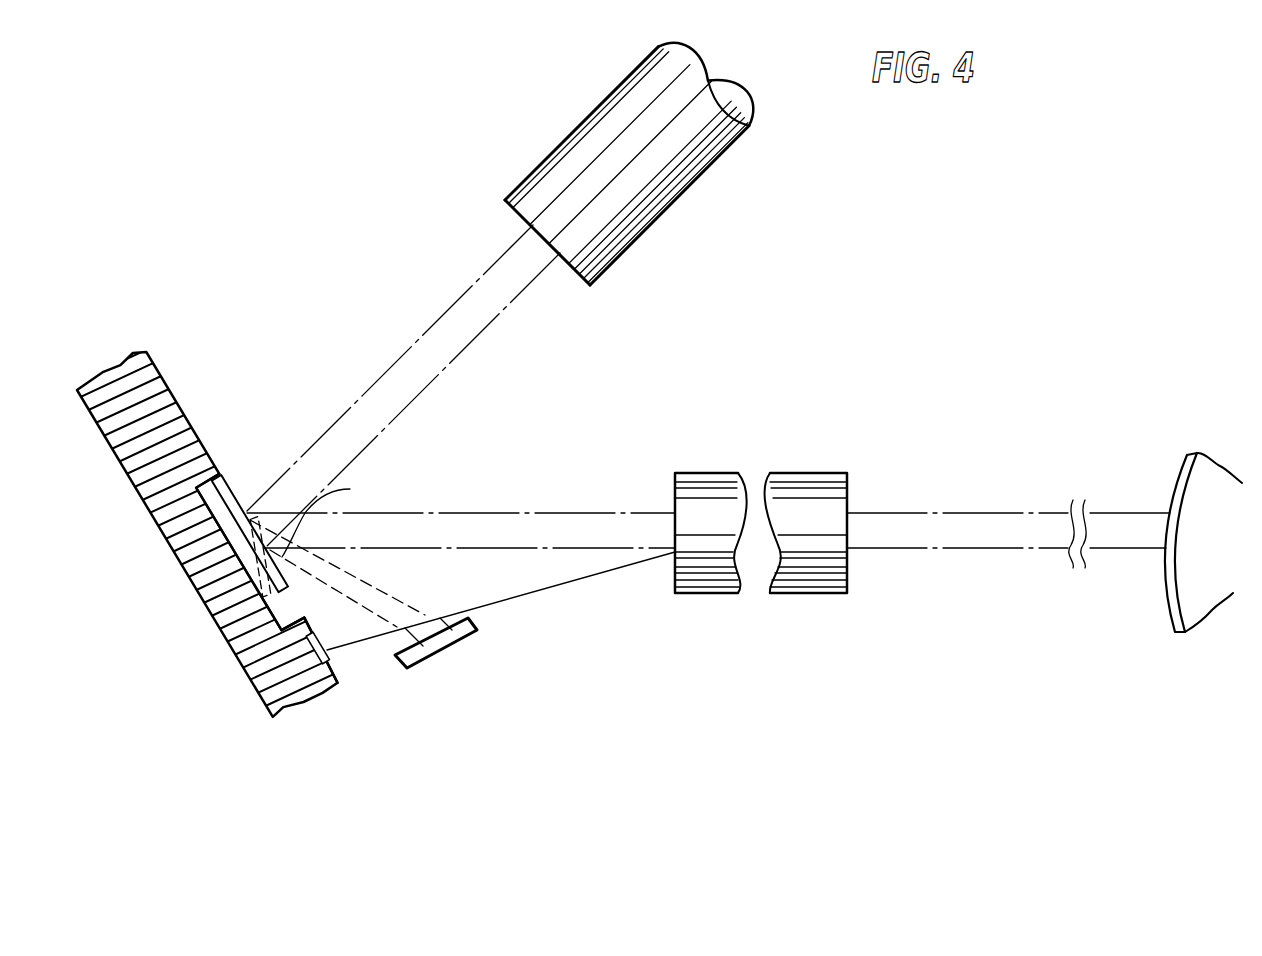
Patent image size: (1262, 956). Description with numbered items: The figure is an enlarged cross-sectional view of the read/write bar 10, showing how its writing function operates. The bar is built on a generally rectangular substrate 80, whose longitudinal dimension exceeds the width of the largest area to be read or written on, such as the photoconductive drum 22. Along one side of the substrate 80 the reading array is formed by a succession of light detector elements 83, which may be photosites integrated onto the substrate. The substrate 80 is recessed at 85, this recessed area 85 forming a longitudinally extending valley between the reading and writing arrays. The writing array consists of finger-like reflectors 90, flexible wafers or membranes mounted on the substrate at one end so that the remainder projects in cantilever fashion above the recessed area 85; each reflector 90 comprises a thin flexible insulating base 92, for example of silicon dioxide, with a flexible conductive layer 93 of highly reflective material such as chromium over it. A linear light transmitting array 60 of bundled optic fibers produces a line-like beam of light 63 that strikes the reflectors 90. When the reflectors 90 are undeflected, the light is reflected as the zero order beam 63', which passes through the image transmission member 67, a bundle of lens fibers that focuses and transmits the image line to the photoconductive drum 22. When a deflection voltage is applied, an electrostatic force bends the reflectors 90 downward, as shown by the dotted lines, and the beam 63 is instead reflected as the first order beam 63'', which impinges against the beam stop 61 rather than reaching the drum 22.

The read/write bar 10 is at (208, 653).
The photoconductive drum 22 is at (1173, 482).
The light transmitting array 60 is at (577, 100).
The beam stop 61 is at (460, 639).
The beam of light 63 is at (403, 386).
The zero order beam 63' is at (708, 521).
The first order beam 63'' is at (462, 585).
The image transmission member 67 is at (797, 471).
The substrate 80 is at (148, 507).
The light detector elements 83 is at (332, 657).
The recessed area 85 is at (275, 622).
The reflectors 90 is at (242, 461).
The insulating base 92 is at (229, 545).
The conductive layer 93 is at (331, 515).